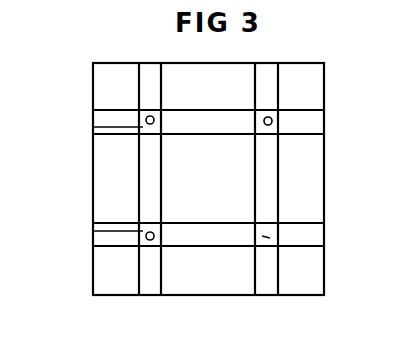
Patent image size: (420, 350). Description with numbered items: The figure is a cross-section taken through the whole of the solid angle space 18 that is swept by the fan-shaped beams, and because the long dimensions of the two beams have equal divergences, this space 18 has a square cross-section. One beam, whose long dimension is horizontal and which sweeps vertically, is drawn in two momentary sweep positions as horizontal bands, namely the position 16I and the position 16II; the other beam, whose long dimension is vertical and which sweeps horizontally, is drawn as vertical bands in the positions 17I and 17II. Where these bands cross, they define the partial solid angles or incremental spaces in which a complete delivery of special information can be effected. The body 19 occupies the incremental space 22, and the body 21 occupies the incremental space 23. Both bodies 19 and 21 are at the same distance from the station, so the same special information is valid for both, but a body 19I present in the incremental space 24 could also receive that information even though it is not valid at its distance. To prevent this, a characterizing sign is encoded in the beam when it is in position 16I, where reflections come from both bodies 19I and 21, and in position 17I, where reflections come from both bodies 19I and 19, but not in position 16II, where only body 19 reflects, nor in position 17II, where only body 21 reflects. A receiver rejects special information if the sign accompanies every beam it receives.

The momentary position of beam 16 16I is at (316, 123).
The momentary position of beam 16 16II is at (316, 235).
The momentary position of beam 17 17I is at (146, 308).
The momentary position of beam 17 17II is at (266, 283).
The solid angle space 18 is at (220, 189).
The body 19 is at (147, 239).
The body 19I is at (146, 118).
The body 21 is at (272, 119).
The incremental space 22 is at (93, 231).
The incremental space 23 is at (262, 113).
The incremental space 24 is at (93, 127).